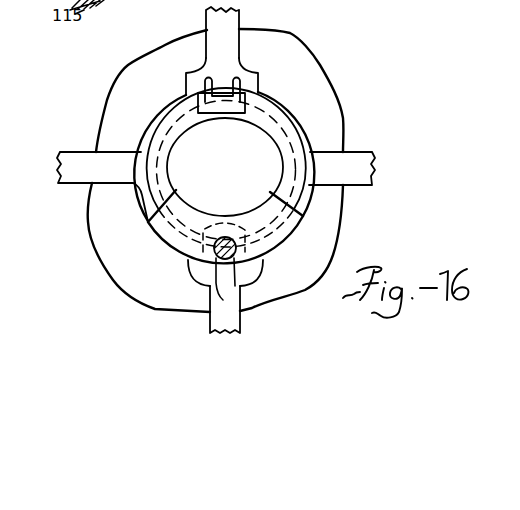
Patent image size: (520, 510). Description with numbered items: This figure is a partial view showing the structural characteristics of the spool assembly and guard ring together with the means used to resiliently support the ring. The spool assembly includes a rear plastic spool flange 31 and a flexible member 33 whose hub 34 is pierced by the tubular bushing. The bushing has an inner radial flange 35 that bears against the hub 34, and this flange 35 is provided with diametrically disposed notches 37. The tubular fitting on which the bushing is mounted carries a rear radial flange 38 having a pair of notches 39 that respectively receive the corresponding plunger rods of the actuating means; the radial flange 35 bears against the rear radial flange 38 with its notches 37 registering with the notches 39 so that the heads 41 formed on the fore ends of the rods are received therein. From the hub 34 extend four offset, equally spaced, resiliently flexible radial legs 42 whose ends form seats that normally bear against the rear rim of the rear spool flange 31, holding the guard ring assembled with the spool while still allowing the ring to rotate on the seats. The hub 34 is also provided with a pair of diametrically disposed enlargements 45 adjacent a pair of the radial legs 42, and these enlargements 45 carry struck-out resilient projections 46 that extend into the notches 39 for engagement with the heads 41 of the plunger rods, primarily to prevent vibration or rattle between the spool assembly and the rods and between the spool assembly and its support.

The rear plastic spool flange 31 is at (291, 42).
The flexible member 33 is at (288, 105).
The hub 34 is at (300, 127).
The inner radial flange 35 is at (292, 153).
The notches 37 is at (236, 109).
The rear radial flange 38 is at (183, 192).
The notches 39 is at (207, 284).
The heads 41 is at (242, 282).
The resiliently flexible radial legs 42 is at (232, 22).
The enlargements 45 is at (243, 63).
The struckout resilient projections 46 is at (226, 89).